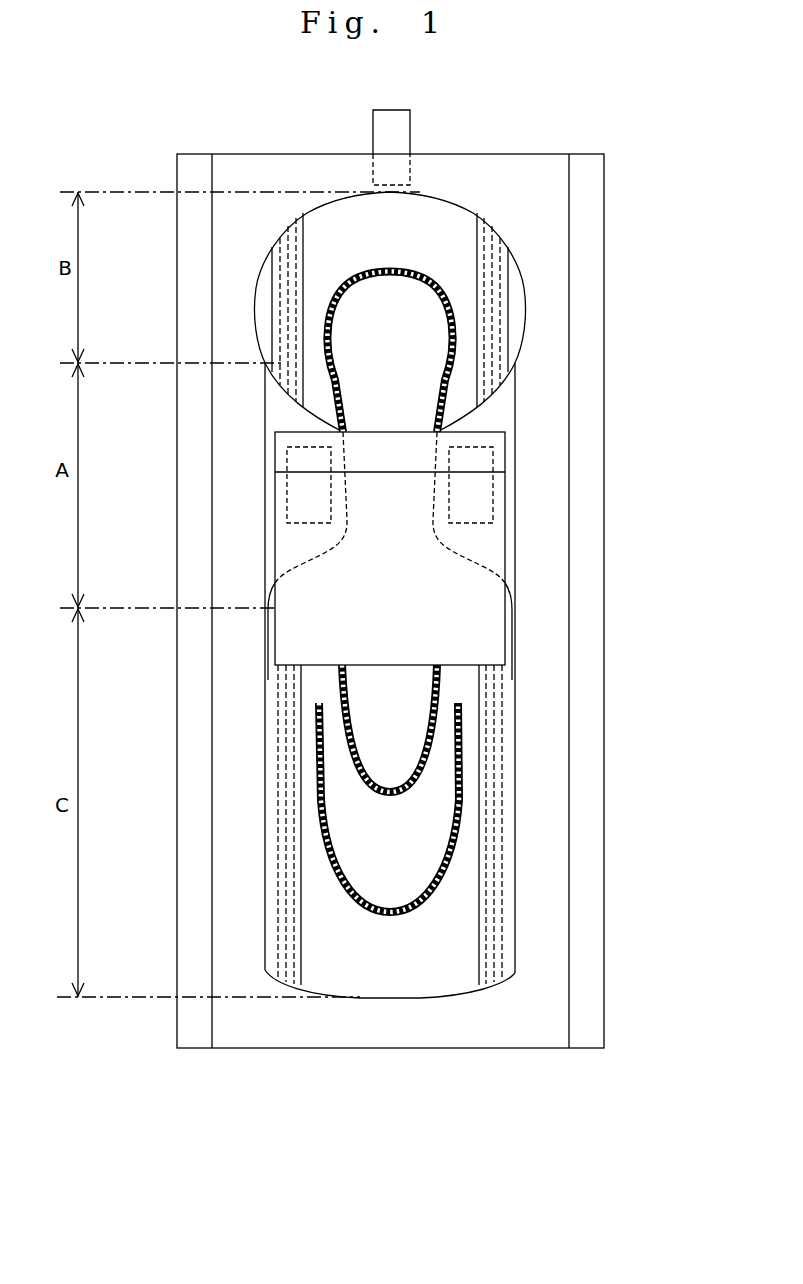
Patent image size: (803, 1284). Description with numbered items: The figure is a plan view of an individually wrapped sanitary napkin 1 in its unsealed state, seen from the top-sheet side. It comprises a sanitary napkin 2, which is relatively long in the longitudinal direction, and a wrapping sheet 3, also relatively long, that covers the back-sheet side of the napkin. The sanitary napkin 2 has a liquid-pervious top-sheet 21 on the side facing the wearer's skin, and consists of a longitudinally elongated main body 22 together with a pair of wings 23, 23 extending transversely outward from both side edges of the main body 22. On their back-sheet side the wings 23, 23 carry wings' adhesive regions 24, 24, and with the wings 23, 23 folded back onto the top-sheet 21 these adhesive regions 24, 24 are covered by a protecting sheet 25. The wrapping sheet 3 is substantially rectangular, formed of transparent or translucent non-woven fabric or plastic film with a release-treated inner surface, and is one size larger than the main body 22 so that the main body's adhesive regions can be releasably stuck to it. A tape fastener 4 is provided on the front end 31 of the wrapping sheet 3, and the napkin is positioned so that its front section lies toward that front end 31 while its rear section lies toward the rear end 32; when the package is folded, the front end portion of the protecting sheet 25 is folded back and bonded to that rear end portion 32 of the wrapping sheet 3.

The individually wrapped sanitary napkin 1 is at (172, 135).
The sanitary napkin 2 is at (668, 285).
The wrapping sheet 3 is at (515, 170).
The tape fastener 4 is at (405, 112).
The top-sheet 21 is at (432, 205).
The main body 22 is at (473, 295).
The wings 23 is at (480, 417).
The wings' adhesive regions 24 is at (298, 498).
The protecting sheet 25 is at (487, 615).
The front end 31 is at (197, 167).
The rear end 32 is at (229, 1050).